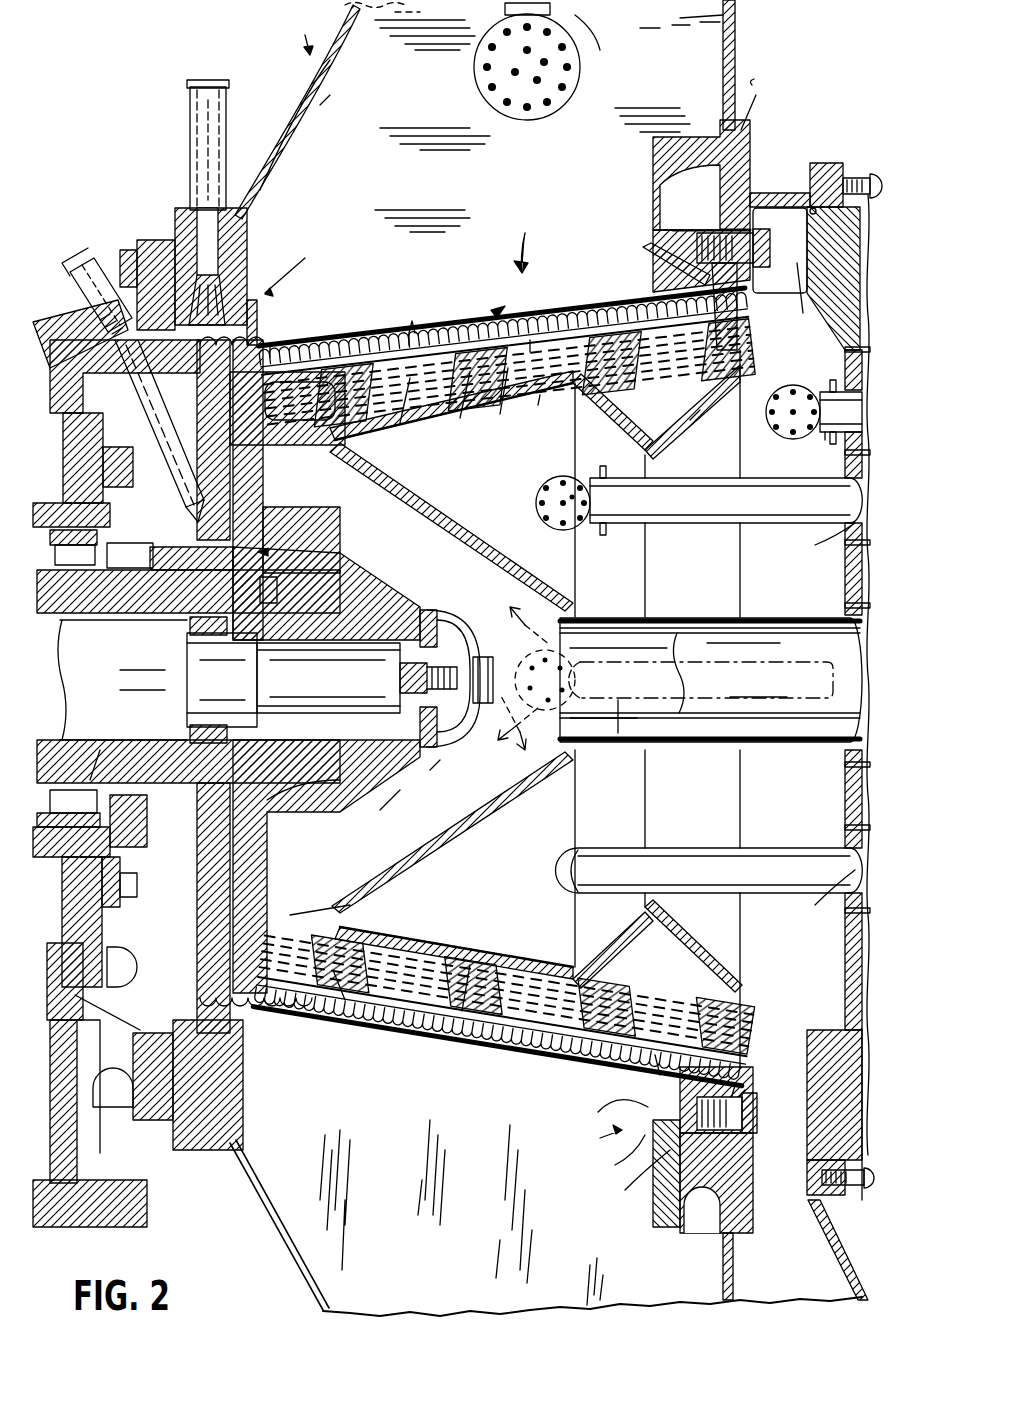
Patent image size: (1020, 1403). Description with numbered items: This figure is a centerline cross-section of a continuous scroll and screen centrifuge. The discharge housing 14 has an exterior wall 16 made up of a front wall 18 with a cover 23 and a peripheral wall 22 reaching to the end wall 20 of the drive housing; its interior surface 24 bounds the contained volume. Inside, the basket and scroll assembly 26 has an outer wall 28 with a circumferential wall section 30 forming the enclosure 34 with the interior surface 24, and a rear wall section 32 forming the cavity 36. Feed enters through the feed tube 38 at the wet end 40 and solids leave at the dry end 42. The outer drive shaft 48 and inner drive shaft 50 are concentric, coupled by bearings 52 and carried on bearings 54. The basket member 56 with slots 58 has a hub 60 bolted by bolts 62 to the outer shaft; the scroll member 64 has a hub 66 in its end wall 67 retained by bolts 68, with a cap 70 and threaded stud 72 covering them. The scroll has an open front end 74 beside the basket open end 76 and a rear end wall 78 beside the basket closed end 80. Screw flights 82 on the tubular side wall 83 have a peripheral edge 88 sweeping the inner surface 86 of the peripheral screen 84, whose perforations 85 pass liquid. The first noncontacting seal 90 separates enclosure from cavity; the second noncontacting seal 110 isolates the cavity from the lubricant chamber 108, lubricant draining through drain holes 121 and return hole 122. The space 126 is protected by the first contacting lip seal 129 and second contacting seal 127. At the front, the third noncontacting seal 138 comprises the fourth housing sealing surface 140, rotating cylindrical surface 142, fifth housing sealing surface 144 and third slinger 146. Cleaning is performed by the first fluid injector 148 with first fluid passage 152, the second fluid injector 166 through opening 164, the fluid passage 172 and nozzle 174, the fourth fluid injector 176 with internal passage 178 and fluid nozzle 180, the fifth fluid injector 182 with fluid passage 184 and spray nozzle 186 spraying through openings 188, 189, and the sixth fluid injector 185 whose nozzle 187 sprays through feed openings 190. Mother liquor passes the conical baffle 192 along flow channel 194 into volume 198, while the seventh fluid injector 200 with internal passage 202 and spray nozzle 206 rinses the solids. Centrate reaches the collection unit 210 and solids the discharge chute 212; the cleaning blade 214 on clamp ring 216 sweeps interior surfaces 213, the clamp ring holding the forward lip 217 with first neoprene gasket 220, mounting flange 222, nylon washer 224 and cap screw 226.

The discharge housing 14 is at (355, 29).
The exterior wall 16 is at (292, 112).
The front wall 18 is at (756, 128).
The end wall 20 is at (58, 1226).
The peripheral wall 22 is at (341, 96).
The cover 23 is at (851, 172).
The interior surface 24 is at (266, 190).
The basket and scroll assembly 26 is at (521, 241).
The outer wall 28 is at (571, 289).
The circumferential wall section 30 is at (356, 342).
The rear wall section 32 is at (195, 906).
The enclosure 34 is at (536, 176).
The cavity 36 is at (177, 956).
The feed tube 38 is at (661, 740).
The wet end 40 is at (260, 1025).
The dry end 42 is at (738, 1065).
The outer drive shaft 48 is at (98, 615).
The inner drive shaft 50 is at (159, 692).
The bearings 52 is at (218, 638).
The bearings 54 is at (50, 790).
The basket member 56 is at (500, 307).
The slots 58 is at (417, 332).
The hub 60 is at (180, 610).
The bolts 62 is at (345, 573).
The scroll member 64 is at (480, 419).
The hub 66 is at (338, 793).
The end wall 67 is at (435, 610).
The bolts 68 is at (455, 758).
The cap 70 is at (470, 735).
The threaded stud 72 is at (468, 658).
The open front end 74 is at (745, 1030).
The open end 76 is at (748, 1086).
The rear end wall 78 is at (257, 872).
The closed end 80 is at (235, 484).
The screw flights 82 is at (420, 425).
The tubular side wall 83 is at (516, 417).
The peripheral screen 84 is at (528, 326).
The perforations 85 is at (660, 393).
The inner surface 86 is at (695, 420).
The peripheral edge 88 is at (300, 401).
The first noncontacting seal 90 is at (305, 258).
The chamber 108 is at (60, 322).
The second noncontacting seal 110 is at (105, 758).
The drain holes 121 is at (110, 840).
The return hole 122 is at (137, 884).
The space 126 is at (270, 523).
The second contacting seal 127 is at (330, 518).
The first contacting lip seal 129 is at (255, 722).
The third noncontacting seal 138 is at (606, 1155).
The fourth housing sealing surface 140 is at (652, 1208).
The rotating cylindrical surface 142 is at (715, 1215).
The fifth housing sealing surface 144 is at (620, 1176).
The third slinger 146 is at (607, 1119).
The first fluid injector 148 is at (192, 135).
The first fluid passage 152 is at (200, 225).
The opening 164 is at (205, 524).
The second fluid injector 166 is at (80, 266).
The fluid passage 172 is at (580, 25).
The nozzle 174 is at (580, 88).
The fourth fluid injector 176 is at (837, 382).
The internal passage 178 is at (827, 438).
The fluid nozzle 180 is at (771, 395).
The fifth fluid injector 182 is at (774, 524).
The fluid passage 184 is at (820, 545).
The sixth fluid injector 185 is at (619, 740).
The spray nozzle 186 is at (536, 512).
The nozzle 187 is at (575, 630).
The openings 188 is at (542, 406).
The openings 189 is at (468, 956).
The feed openings 190 is at (302, 922).
The conical baffle 192 is at (485, 818).
The flow channel 194 is at (435, 818).
The volume 198 is at (348, 990).
The seventh fluid injector 200 is at (775, 856).
The internal passage 202 is at (818, 897).
The spray nozzle 206 is at (592, 858).
The collection unit 210 is at (472, 1262).
The discharge chute 212 is at (815, 1290).
The interior surfaces 213 is at (804, 193).
The cleaning blade 214 is at (802, 312).
The clamp ring 216 is at (780, 290).
The forward lip 217 is at (750, 1088).
The first neoprene gasket 220 is at (804, 1150).
The mounting flange 222 is at (752, 210).
The nylon washer 224 is at (780, 248).
The cap screw 226 is at (663, 232).